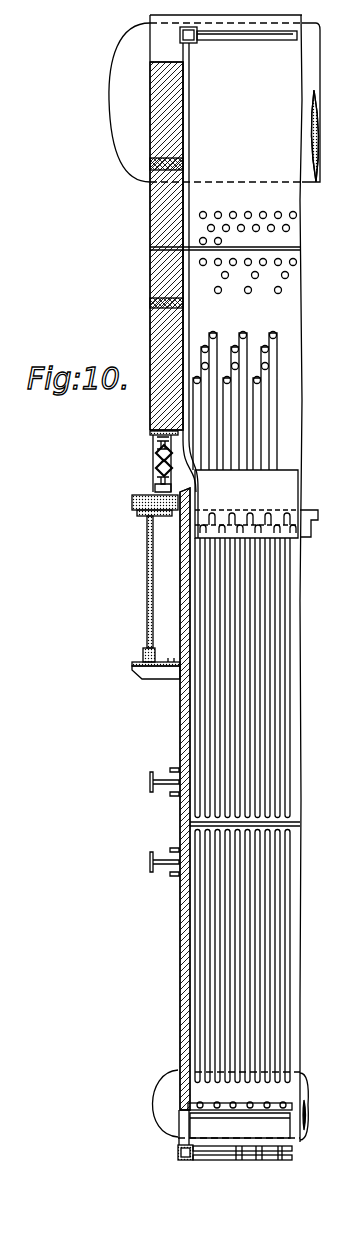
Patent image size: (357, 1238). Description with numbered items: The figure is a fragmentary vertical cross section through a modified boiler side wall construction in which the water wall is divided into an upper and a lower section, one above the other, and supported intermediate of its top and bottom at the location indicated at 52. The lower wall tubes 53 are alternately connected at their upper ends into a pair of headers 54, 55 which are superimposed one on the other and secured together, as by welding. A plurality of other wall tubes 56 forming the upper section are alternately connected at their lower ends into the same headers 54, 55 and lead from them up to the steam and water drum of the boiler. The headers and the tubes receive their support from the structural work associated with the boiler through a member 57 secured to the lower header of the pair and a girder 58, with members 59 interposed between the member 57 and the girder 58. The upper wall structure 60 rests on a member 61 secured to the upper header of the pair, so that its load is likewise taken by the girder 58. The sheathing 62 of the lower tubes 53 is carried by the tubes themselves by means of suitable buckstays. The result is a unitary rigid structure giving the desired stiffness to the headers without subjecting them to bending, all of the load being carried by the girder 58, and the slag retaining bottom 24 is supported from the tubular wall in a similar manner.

The slag retaining bottom 24 is at (270, 1103).
The intermediate wall support 52 is at (147, 460).
The wall tubes 53 is at (200, 593).
The header 54 is at (160, 475).
The header 55 is at (157, 447).
The wall tubes 56 is at (192, 326).
The member 57 is at (160, 483).
The girder 58 is at (146, 548).
The members 59 is at (142, 505).
The upper wall structure 60 is at (150, 270).
The member 61 is at (152, 432).
The sheathing 62 is at (180, 725).